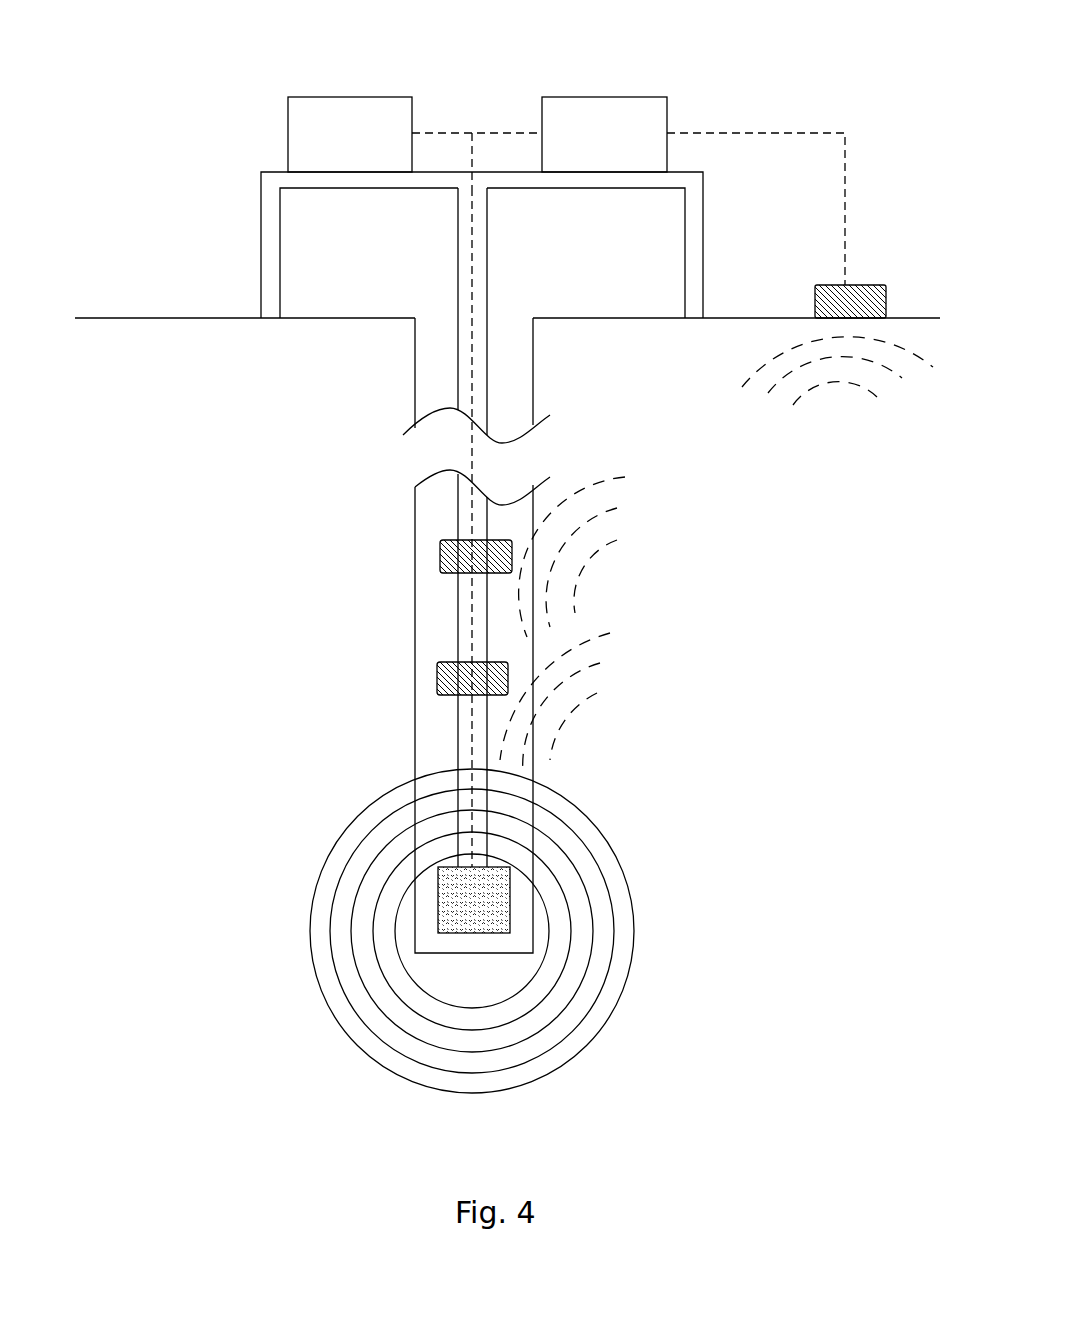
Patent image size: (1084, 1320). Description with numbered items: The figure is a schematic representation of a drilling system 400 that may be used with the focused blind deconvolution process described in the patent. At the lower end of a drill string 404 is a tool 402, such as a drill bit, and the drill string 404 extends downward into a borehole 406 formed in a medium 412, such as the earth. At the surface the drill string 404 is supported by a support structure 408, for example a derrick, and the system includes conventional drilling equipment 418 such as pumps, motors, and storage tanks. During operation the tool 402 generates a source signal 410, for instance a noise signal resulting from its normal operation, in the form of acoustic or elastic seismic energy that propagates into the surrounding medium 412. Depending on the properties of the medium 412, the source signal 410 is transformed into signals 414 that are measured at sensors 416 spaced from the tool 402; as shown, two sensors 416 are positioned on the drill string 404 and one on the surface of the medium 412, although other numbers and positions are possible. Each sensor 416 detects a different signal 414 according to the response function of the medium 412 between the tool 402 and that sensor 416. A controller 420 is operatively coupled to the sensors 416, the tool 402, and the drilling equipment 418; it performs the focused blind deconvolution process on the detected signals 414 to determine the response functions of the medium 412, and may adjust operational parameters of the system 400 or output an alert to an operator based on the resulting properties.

The drilling system 400 is at (192, 117).
The tool 402 is at (442, 907).
The drill string 404 is at (458, 358).
The borehole 406 is at (433, 503).
The support structure 408 is at (261, 242).
The source signal 410 is at (645, 901).
The medium 412 is at (221, 565).
The signals 414 is at (622, 530).
The sensors 416 is at (883, 285).
The drilling equipment 418 is at (356, 95).
The controller 420 is at (597, 95).